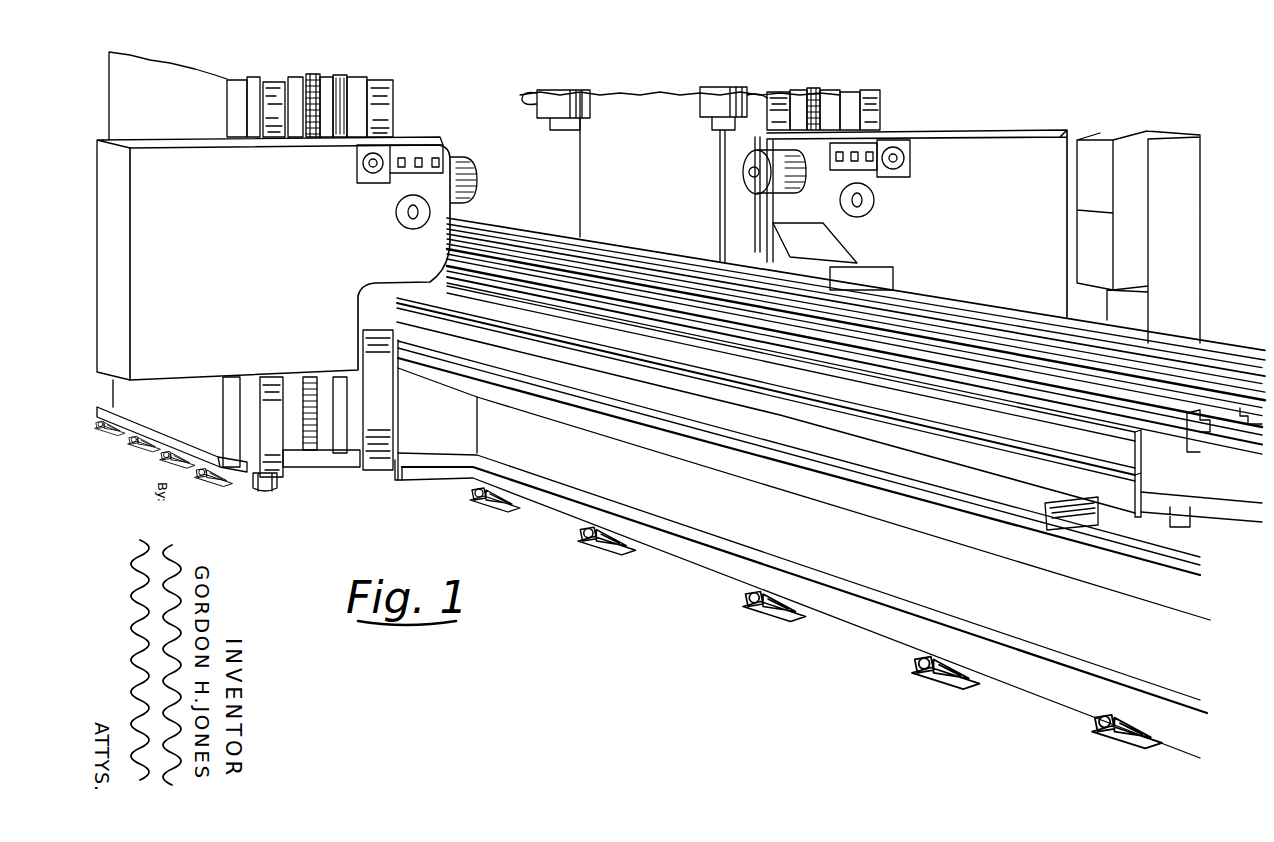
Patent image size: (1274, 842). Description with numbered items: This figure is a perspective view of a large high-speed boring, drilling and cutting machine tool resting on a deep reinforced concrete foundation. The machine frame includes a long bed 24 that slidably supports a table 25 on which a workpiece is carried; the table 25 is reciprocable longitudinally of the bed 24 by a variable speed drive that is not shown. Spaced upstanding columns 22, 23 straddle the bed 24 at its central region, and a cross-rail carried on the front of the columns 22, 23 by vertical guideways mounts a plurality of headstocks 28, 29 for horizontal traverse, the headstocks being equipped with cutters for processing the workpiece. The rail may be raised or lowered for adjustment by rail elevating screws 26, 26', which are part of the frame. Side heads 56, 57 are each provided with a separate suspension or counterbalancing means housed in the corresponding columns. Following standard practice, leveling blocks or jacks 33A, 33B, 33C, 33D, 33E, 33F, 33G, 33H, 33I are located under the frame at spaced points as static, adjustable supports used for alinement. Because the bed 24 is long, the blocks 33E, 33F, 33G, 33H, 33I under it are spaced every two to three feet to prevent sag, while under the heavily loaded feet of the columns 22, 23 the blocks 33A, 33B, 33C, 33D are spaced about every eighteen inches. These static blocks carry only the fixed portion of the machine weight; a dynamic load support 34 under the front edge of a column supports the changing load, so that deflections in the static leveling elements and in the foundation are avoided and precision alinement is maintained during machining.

The upstanding column 22 is at (394, 114).
The upstanding column 23 is at (645, 182).
The bed 24 is at (802, 537).
The table 25 is at (1055, 483).
The rail elevating screw 26 is at (333, 90).
The rail elevating screw 26' is at (823, 92).
The headstock 28 is at (538, 118).
The headstock 29 is at (700, 112).
The leveling block 33A is at (228, 488).
The leveling block 33B is at (176, 455).
The leveling block 33C is at (134, 451).
The leveling block 33D is at (109, 440).
The leveling block 33E is at (527, 511).
The leveling block 33F is at (637, 548).
The leveling block 33G is at (788, 620).
The leveling block 33H is at (966, 687).
The leveling block 33I is at (1094, 737).
The dynamic load support 34 is at (283, 481).
The side head 56 is at (273, 267).
The side head 57 is at (975, 177).